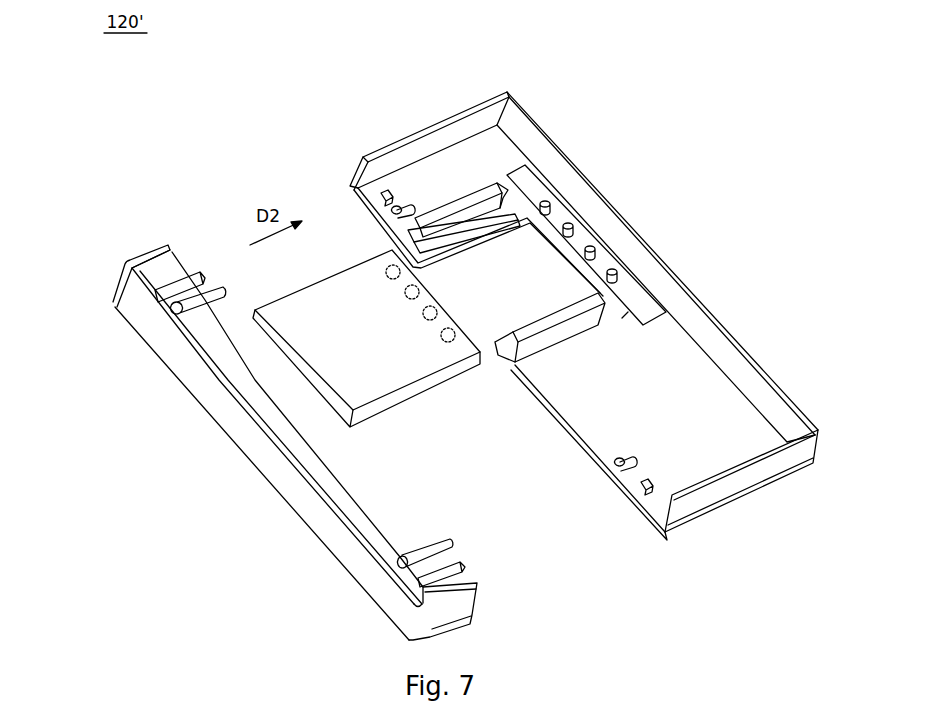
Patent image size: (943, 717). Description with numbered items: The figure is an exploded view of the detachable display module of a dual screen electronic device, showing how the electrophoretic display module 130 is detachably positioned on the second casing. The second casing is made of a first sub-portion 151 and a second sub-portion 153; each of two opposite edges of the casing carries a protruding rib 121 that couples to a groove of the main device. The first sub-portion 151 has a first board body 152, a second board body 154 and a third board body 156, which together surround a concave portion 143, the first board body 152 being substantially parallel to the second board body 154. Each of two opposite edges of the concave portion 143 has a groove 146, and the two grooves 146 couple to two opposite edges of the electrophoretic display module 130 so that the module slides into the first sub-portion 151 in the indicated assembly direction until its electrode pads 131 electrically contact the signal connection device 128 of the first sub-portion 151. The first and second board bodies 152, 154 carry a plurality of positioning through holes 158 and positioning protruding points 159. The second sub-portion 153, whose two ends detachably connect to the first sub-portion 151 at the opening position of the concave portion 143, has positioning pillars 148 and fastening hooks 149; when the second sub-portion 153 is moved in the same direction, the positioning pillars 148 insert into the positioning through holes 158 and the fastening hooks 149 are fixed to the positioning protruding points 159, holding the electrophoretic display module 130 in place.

The protruding rib 121 is at (352, 182).
The signal connection device 128 is at (635, 302).
The electrophoretic display module 130 is at (295, 302).
The electrode pads 131 is at (450, 332).
The concave portion 143 is at (417, 253).
The groove 146 is at (426, 218).
The positioning pillars 148 is at (170, 306).
The fastening hooks 149 is at (160, 290).
The first sub-portion 151 is at (795, 68).
The first board body 152 is at (465, 150).
The second sub-portion 153 is at (233, 403).
The second board body 154 is at (653, 432).
The third board body 156 is at (582, 270).
The positioning through holes 158 is at (395, 212).
The positioning protruding points 159 is at (383, 198).